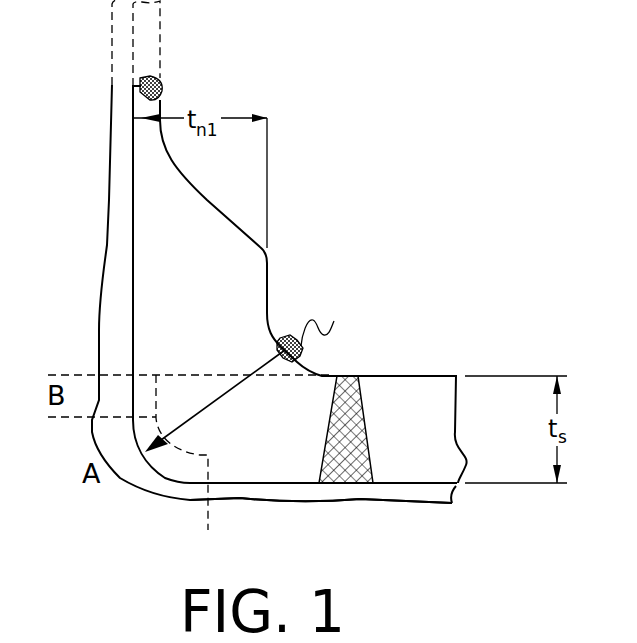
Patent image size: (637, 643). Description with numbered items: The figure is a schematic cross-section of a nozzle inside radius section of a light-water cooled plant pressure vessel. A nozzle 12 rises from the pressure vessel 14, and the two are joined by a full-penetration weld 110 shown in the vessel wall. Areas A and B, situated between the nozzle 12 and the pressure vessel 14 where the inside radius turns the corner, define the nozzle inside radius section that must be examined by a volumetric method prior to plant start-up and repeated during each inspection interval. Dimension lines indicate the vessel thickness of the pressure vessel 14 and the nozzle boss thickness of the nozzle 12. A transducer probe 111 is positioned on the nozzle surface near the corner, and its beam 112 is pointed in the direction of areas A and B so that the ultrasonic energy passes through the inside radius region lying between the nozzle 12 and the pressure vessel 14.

The nozzle 12 is at (131, 222).
The pressure vessel 14 is at (252, 483).
The weld 110 is at (364, 491).
The transducer probe 111 is at (284, 340).
The beam 112 is at (215, 400).